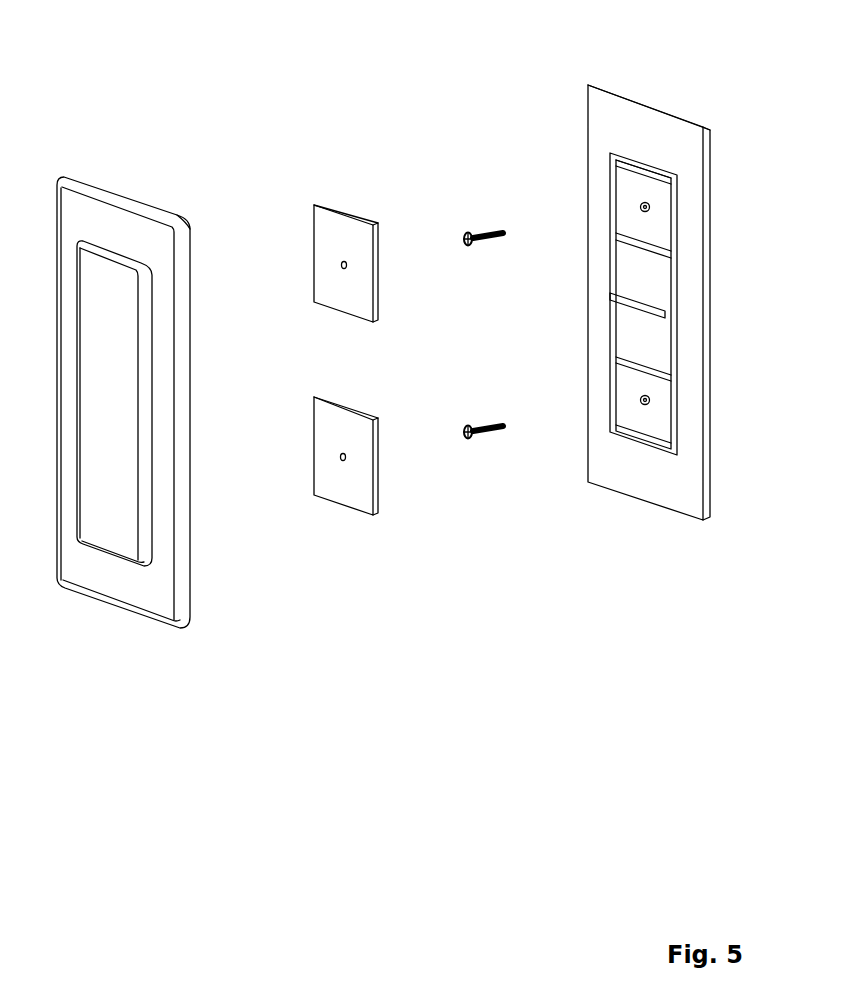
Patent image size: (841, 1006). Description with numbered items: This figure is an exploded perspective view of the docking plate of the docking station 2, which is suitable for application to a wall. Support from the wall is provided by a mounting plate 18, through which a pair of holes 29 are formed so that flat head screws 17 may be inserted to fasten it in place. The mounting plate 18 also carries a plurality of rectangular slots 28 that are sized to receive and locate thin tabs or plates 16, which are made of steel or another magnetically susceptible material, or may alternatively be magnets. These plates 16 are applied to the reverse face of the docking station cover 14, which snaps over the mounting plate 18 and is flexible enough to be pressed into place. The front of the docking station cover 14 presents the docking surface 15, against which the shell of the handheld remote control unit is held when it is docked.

The docking station 2 is at (386, 725).
The docking station cover 14 is at (126, 160).
The docking surface 15 is at (158, 568).
The plates 16 is at (336, 240).
The flat head screws 17 is at (478, 232).
The mounting plate 18 is at (668, 72).
The rectangular slots 28 is at (628, 414).
The holes 29 is at (648, 210).